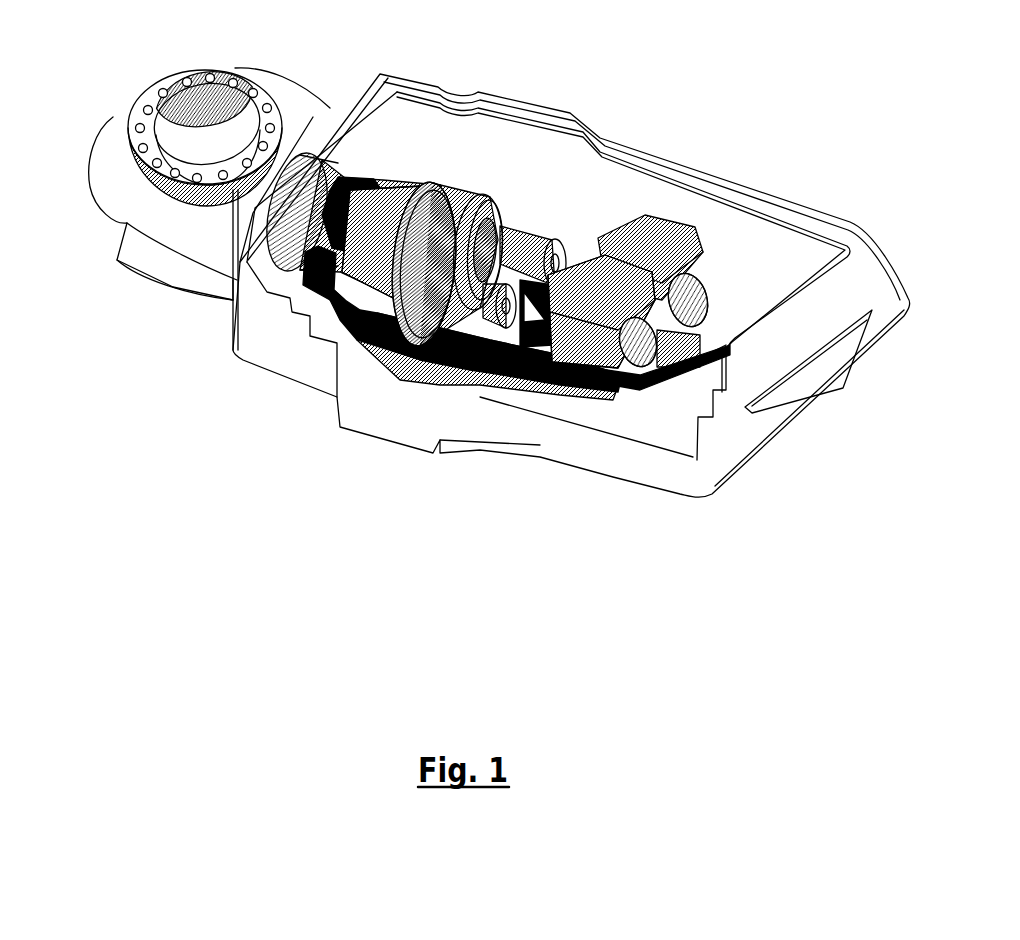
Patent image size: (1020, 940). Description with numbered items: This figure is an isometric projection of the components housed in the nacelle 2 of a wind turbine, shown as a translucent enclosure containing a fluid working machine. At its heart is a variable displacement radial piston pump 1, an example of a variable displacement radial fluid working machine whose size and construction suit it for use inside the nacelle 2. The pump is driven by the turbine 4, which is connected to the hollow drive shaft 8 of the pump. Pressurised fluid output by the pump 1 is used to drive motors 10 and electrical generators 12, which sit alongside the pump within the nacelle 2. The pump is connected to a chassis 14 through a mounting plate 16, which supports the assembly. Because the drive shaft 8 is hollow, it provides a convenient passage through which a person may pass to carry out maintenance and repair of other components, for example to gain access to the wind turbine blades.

The variable displacement radial piston pump 1 is at (462, 197).
The nacelle 2 is at (703, 177).
The turbine 4 is at (113, 117).
The hollow drive shaft 8 is at (513, 222).
The motors 10 is at (540, 233).
The electrical generators 12 is at (700, 287).
The chassis 14 is at (370, 355).
The mounting plate 16 is at (312, 280).